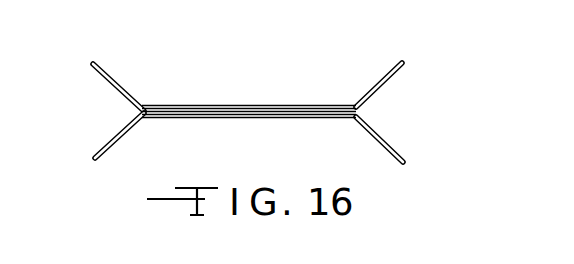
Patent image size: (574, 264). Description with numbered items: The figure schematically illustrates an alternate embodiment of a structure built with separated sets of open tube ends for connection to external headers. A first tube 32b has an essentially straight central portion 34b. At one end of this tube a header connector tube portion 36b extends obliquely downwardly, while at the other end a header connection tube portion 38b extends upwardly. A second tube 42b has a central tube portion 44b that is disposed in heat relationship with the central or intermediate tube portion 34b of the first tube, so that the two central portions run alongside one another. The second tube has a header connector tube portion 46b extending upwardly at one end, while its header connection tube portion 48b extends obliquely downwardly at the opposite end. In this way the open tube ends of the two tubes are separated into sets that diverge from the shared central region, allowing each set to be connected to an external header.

The tube 32b is at (172, 105).
The central portion 34b is at (243, 105).
The header connector tube portion 36b is at (120, 138).
The header connection tube portion 38b is at (390, 78).
The tube 42b is at (215, 118).
The central tube portion 44b is at (295, 118).
The header connector tube portion 46b is at (110, 79).
The header connection tube portion 48b is at (396, 150).